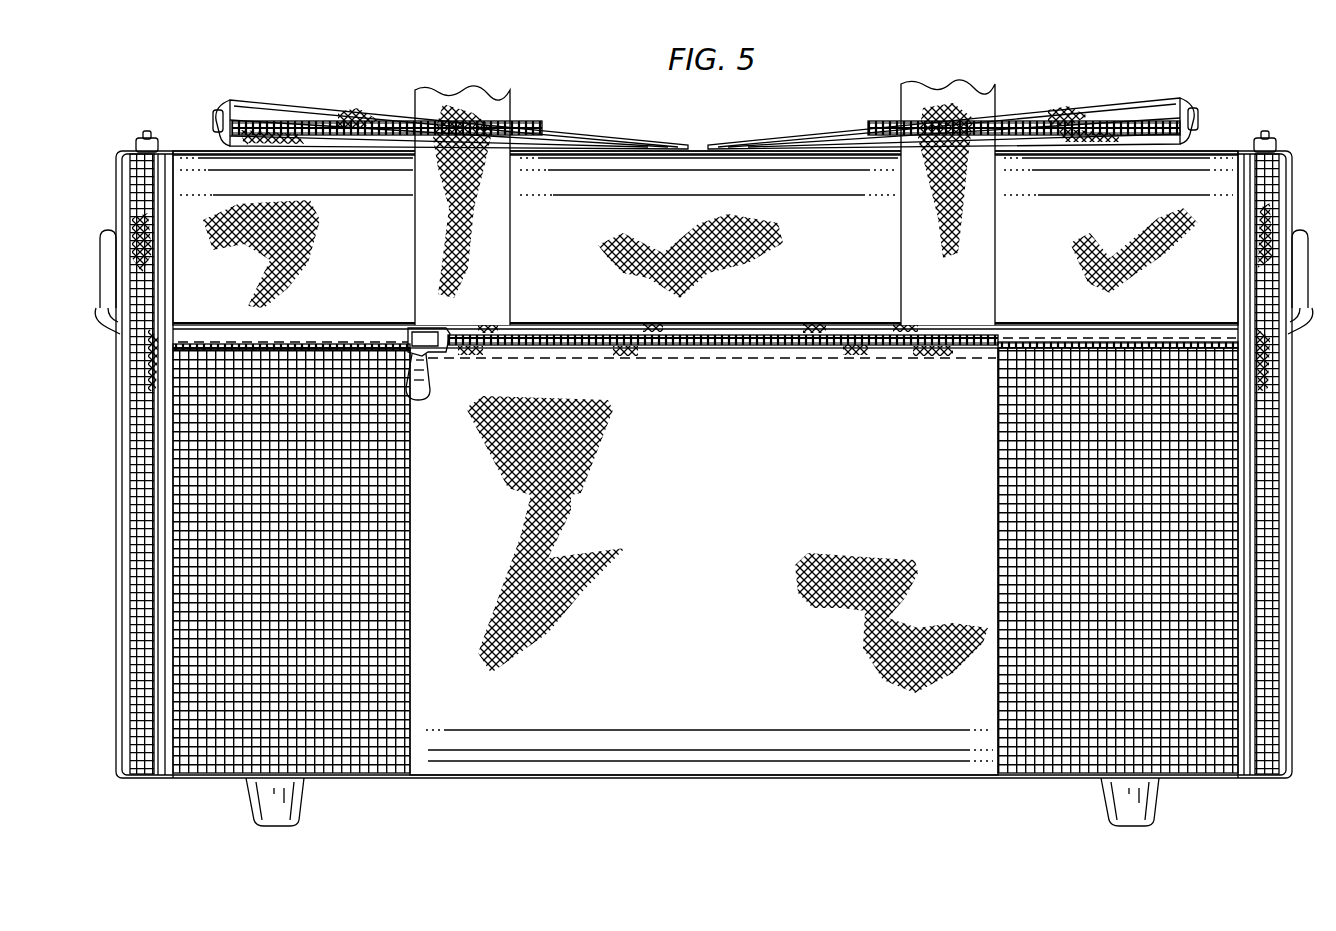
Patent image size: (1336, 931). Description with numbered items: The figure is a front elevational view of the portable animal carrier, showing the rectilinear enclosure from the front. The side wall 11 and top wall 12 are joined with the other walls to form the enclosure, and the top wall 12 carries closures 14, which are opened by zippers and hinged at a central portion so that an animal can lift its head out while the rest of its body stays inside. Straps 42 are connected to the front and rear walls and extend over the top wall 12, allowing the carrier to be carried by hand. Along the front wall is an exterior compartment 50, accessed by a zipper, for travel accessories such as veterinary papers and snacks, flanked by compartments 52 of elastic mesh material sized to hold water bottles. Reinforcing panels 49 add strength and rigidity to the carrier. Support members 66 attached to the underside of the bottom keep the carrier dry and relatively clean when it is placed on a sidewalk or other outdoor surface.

The side wall 11 is at (569, 286).
The top wall 12 is at (1212, 148).
The closure 14 is at (270, 100).
The strap 42 is at (478, 87).
The panel 49 is at (810, 215).
The compartment 50 is at (680, 720).
The compartment 52 is at (375, 770).
The support member 66 is at (296, 808).